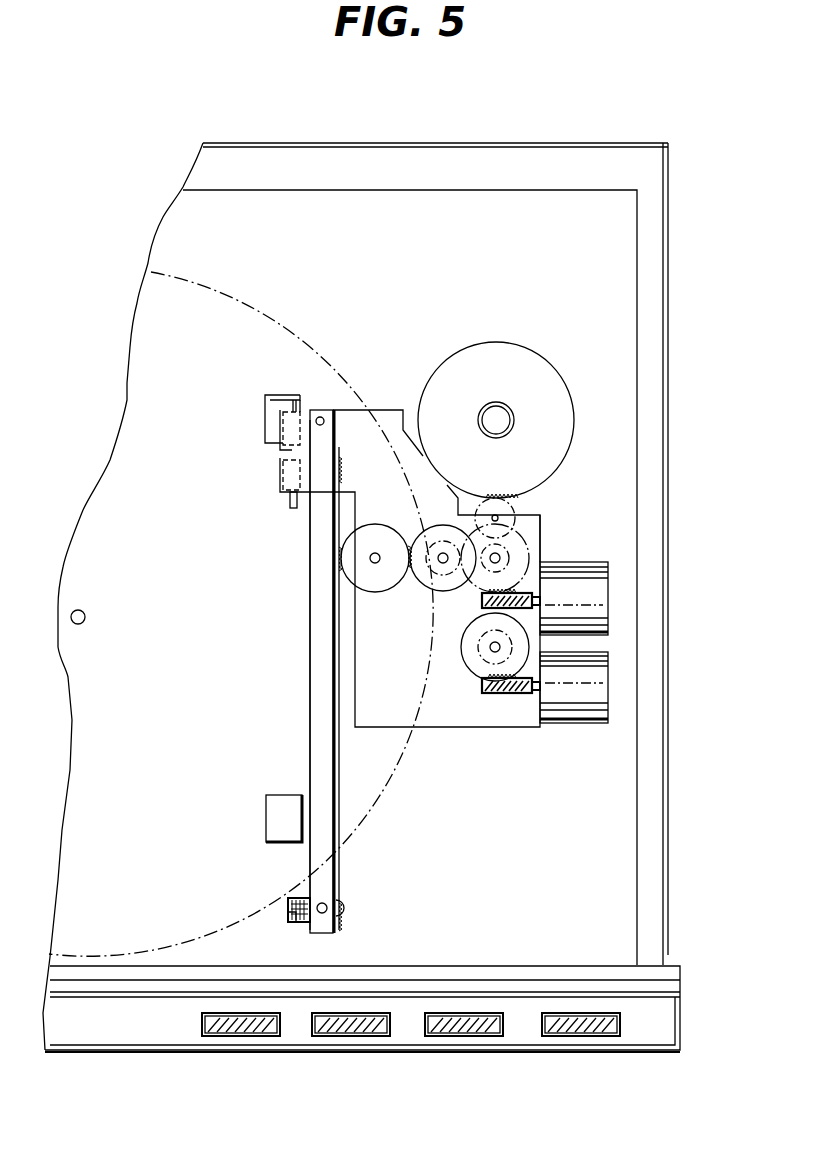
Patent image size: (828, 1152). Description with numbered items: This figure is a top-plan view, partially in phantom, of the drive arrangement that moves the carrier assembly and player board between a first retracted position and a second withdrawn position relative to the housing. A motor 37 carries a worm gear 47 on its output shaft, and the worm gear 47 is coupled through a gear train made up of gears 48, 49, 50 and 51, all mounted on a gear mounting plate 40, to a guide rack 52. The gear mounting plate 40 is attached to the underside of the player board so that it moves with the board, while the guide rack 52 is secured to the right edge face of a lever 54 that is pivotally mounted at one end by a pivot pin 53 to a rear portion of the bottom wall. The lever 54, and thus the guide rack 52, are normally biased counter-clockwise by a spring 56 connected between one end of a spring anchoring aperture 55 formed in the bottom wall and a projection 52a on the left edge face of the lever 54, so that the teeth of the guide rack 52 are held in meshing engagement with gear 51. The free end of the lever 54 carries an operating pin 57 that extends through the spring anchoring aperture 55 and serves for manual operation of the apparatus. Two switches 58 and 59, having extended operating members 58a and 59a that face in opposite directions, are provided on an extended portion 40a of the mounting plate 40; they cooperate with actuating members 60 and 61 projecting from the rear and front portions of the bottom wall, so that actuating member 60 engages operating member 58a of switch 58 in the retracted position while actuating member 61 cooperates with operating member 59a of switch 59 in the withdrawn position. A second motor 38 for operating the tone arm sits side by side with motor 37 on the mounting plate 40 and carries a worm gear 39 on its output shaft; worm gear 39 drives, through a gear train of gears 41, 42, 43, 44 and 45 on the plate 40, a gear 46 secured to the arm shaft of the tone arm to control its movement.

The motor 37 is at (608, 588).
The motor 38 is at (608, 665).
The worm gear 39 is at (503, 694).
The gear mounting plate 40 is at (403, 410).
The extended portion of mounting plate 40a is at (280, 452).
The gear 41 is at (478, 668).
The gear 42 is at (480, 648).
The gear 43 is at (478, 606).
The gear 44 is at (540, 532).
The gear 45 is at (520, 498).
The gear 46 is at (560, 406).
The worm gear 47 is at (545, 560).
The gear 48 is at (548, 542).
The gear 49 is at (440, 541).
The gear 50 is at (412, 582).
The gear 51 is at (377, 540).
The guide rack 52 is at (341, 745).
The projection 52a is at (314, 906).
The pivot pin 53 is at (323, 416).
The lever 54 is at (310, 590).
The spring anchoring aperture 55 is at (290, 906).
The spring 56 is at (288, 915).
The operating pin 57 is at (341, 898).
The switch 58 is at (283, 425).
The operating member 58a is at (292, 410).
The switch 59 is at (280, 483).
The operating member 59a is at (290, 506).
The actuating member 60 is at (267, 395).
The actuating member 61 is at (266, 841).